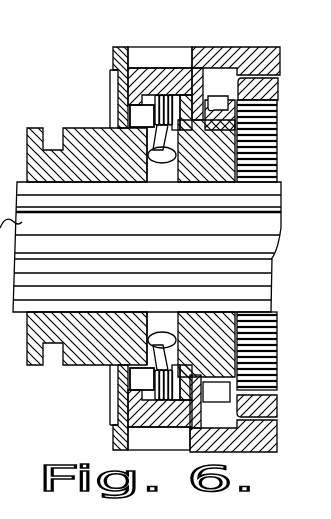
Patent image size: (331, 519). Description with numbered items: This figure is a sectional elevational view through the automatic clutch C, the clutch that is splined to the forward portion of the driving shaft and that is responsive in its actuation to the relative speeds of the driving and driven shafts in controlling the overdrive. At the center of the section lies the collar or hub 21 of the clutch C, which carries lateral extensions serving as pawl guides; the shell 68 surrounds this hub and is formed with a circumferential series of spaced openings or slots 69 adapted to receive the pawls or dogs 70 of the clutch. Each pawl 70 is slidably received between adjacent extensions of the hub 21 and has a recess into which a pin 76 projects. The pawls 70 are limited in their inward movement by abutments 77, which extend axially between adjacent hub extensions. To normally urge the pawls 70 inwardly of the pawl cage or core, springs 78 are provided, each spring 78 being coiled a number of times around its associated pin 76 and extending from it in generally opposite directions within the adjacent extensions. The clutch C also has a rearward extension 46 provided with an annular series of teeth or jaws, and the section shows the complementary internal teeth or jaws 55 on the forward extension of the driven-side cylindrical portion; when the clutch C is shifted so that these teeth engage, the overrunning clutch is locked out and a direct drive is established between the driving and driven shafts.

The collar 21 is at (99, 129).
The rearward extension 46 is at (228, 108).
The internal teeth or jaws 55 is at (258, 176).
The shell 68 is at (118, 438).
The openings or slots 69 is at (149, 52).
The pawls or dogs 70 is at (172, 68).
The pin 76 is at (117, 100).
The abutments 77 is at (178, 165).
The springs 78 is at (156, 165).
The clutch C is at (106, 69).